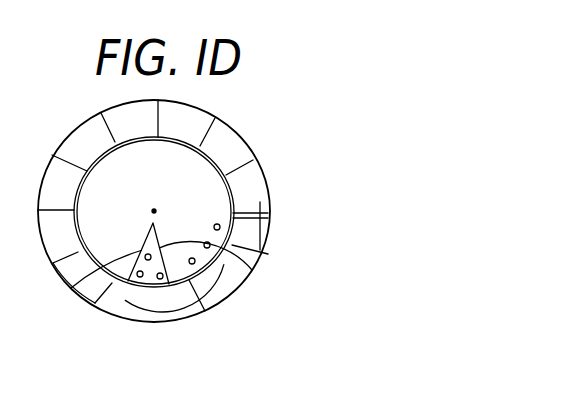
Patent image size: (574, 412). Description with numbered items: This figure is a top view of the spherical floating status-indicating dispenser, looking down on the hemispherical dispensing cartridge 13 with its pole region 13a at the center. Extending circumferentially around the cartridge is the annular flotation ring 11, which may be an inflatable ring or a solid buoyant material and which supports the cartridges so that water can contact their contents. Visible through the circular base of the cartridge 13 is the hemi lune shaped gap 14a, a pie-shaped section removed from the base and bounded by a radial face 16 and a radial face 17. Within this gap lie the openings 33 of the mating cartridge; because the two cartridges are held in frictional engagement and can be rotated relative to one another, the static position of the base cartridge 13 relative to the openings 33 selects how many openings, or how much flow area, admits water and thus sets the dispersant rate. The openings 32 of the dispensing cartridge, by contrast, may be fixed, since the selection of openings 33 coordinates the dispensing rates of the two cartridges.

The flotation ring 11 is at (90, 137).
The hemispherical dispensing cartridge 13 is at (185, 180).
The pole region 13a is at (154, 211).
The hemi lune shaped gap 14a is at (163, 263).
The radial face 16 is at (94, 273).
The radial face 17 is at (268, 254).
The openings 32 is at (268, 219).
The openings 33 is at (158, 280).